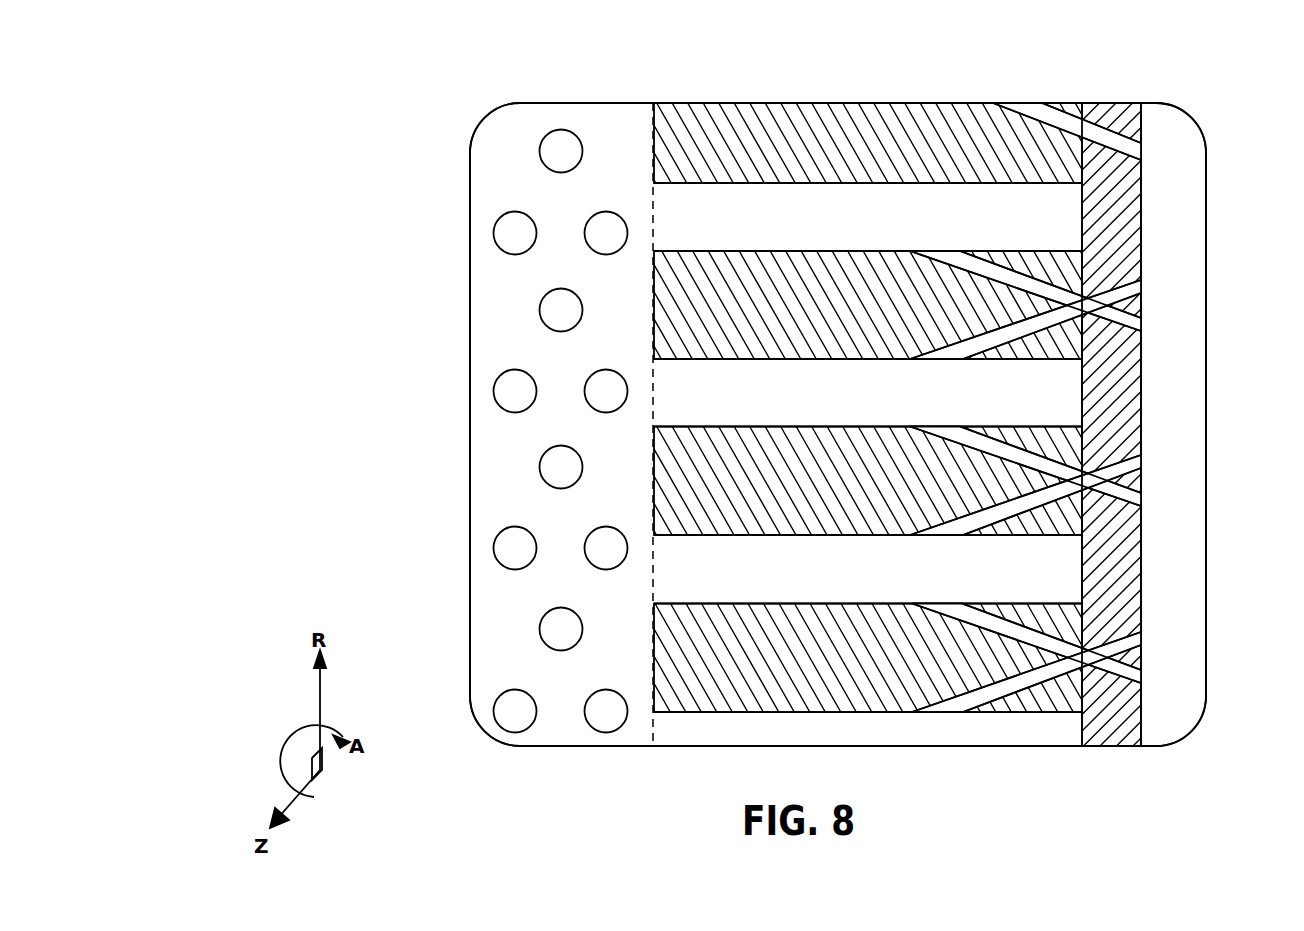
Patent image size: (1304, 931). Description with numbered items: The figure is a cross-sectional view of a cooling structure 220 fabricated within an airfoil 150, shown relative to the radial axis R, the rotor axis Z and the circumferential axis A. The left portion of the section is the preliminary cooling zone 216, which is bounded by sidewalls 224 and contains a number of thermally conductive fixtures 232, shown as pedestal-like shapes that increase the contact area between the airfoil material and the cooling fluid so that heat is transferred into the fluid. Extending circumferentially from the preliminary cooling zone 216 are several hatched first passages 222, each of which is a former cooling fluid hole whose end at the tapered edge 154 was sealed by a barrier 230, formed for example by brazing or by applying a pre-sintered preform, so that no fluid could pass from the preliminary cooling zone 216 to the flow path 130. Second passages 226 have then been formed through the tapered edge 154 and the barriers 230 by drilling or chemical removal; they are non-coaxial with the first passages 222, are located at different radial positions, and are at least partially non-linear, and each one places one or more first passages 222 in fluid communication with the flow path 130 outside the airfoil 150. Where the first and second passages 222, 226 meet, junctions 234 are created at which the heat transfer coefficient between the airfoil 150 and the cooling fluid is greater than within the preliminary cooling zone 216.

The cooling structure 220 is at (482, 86).
The airfoil 150 is at (622, 103).
The tapered edge 154 is at (1141, 125).
The flow path 130 is at (1195, 410).
The preliminary cooling zone 216 is at (575, 210).
The thermally conductive fixture 232 is at (506, 228).
The sidewall 224 is at (654, 123).
The first passage 222 is at (835, 241).
The second passage 226 is at (1130, 150).
The barrier 230 is at (1141, 213).
The junction 234 is at (962, 205).